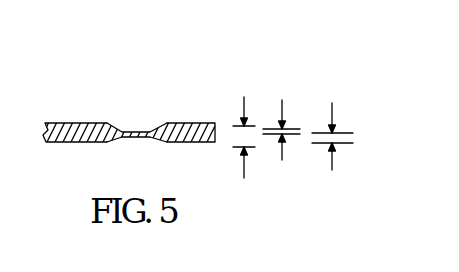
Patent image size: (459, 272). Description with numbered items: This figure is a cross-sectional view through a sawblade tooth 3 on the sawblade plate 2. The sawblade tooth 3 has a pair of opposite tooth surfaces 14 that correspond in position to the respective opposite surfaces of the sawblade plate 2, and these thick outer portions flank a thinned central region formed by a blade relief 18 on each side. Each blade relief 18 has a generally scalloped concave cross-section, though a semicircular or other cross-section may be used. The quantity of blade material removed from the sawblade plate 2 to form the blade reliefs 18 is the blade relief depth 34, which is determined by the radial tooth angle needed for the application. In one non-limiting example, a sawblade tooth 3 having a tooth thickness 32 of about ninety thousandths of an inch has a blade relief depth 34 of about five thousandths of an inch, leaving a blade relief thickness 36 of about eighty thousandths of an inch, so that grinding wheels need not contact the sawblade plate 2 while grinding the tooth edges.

The sawblade plate 2 is at (90, 143).
The sawblade tooth 3 is at (128, 112).
The tooth surfaces 14 is at (93, 123).
The blade relief 18 is at (139, 132).
The tooth thickness 32 is at (234, 147).
The blade relief depth 34 is at (300, 135).
The blade relief thickness 36 is at (353, 143).